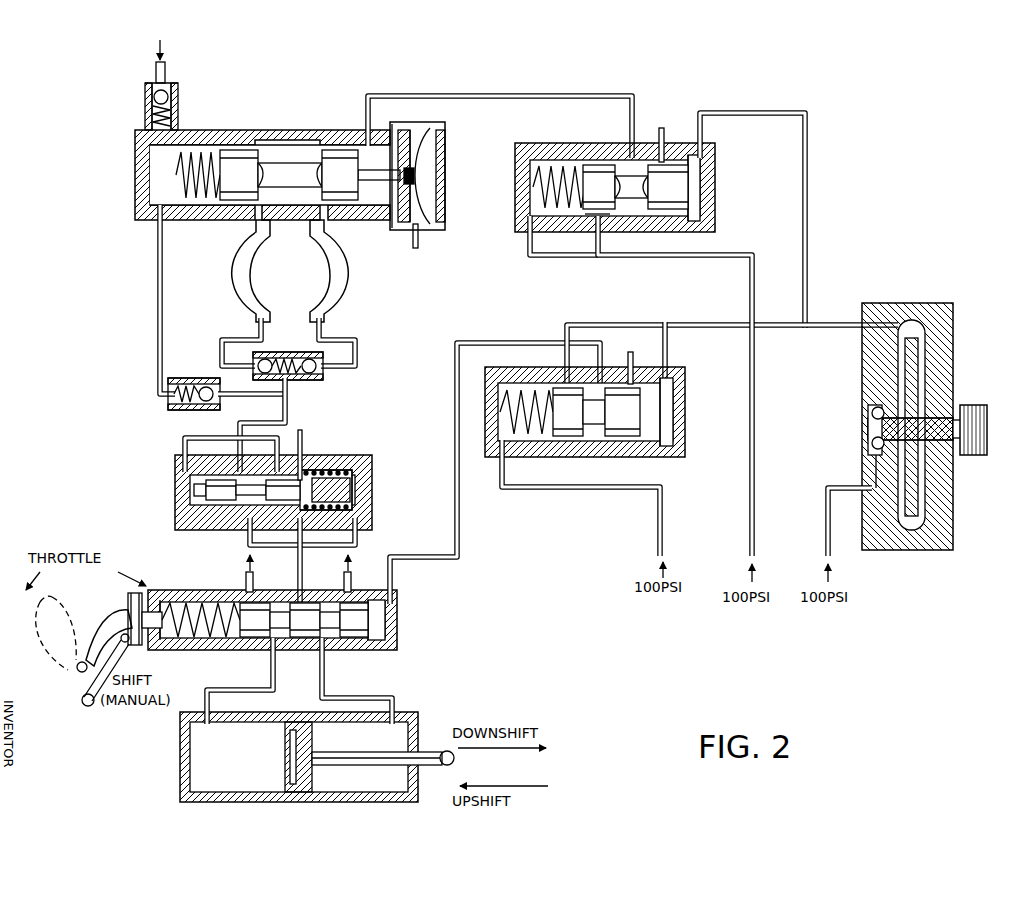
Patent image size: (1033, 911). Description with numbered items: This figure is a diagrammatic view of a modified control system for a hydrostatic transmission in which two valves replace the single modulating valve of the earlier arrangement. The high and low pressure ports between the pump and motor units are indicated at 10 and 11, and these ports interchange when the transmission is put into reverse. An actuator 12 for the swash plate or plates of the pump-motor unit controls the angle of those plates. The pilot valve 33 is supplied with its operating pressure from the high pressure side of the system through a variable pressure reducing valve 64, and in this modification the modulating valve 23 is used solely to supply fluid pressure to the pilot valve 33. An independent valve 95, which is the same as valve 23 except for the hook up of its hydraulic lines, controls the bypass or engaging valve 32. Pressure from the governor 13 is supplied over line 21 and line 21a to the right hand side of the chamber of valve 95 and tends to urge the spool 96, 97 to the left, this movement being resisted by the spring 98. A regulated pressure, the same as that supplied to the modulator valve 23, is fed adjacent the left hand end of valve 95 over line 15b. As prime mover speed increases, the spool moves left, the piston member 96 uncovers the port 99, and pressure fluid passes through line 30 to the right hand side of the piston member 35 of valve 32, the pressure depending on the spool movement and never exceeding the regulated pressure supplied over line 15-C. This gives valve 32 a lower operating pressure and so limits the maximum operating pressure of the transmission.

The bypass valve 32 is at (253, 117).
The piston member 35 is at (350, 177).
The line 30 is at (476, 102).
The low pressure port 11 is at (241, 261).
The high pressure port 10 is at (339, 275).
The variable pressure reducing valve 64 is at (372, 498).
The pilot valve 33 is at (398, 609).
The actuator 12 is at (427, 750).
The independent valve 95 is at (617, 178).
The spring 98 is at (516, 185).
The port 99 is at (598, 150).
The spool 97 is at (692, 206).
The piston member 96 is at (590, 220).
The line 15b is at (562, 259).
The line 15-C is at (648, 258).
The line 21a is at (808, 183).
The line 21 is at (824, 330).
The modulating valve 23 is at (688, 404).
The governor 13 is at (968, 354).